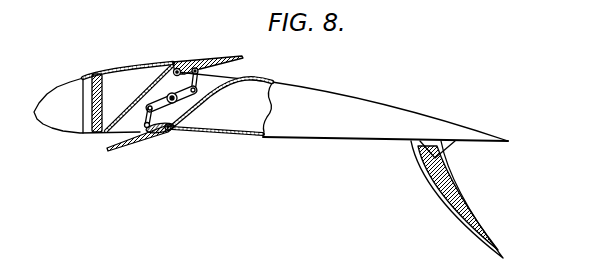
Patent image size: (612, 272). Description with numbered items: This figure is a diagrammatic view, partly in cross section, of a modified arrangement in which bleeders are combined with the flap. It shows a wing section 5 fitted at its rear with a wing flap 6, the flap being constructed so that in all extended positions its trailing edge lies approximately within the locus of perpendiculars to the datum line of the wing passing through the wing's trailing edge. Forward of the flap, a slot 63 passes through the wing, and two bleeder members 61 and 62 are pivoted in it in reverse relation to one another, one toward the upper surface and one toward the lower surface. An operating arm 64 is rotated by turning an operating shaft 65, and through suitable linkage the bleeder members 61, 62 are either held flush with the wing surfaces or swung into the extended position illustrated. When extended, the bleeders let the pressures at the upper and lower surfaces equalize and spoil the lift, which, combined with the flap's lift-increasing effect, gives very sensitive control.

The wing section 5 is at (366, 99).
The wing flap 6 is at (456, 203).
The bleeder member 61 is at (197, 67).
The bleeder member 62 is at (143, 134).
The slot 63 is at (222, 78).
The operating arm 64 is at (185, 107).
The operating shaft 65 is at (172, 92).